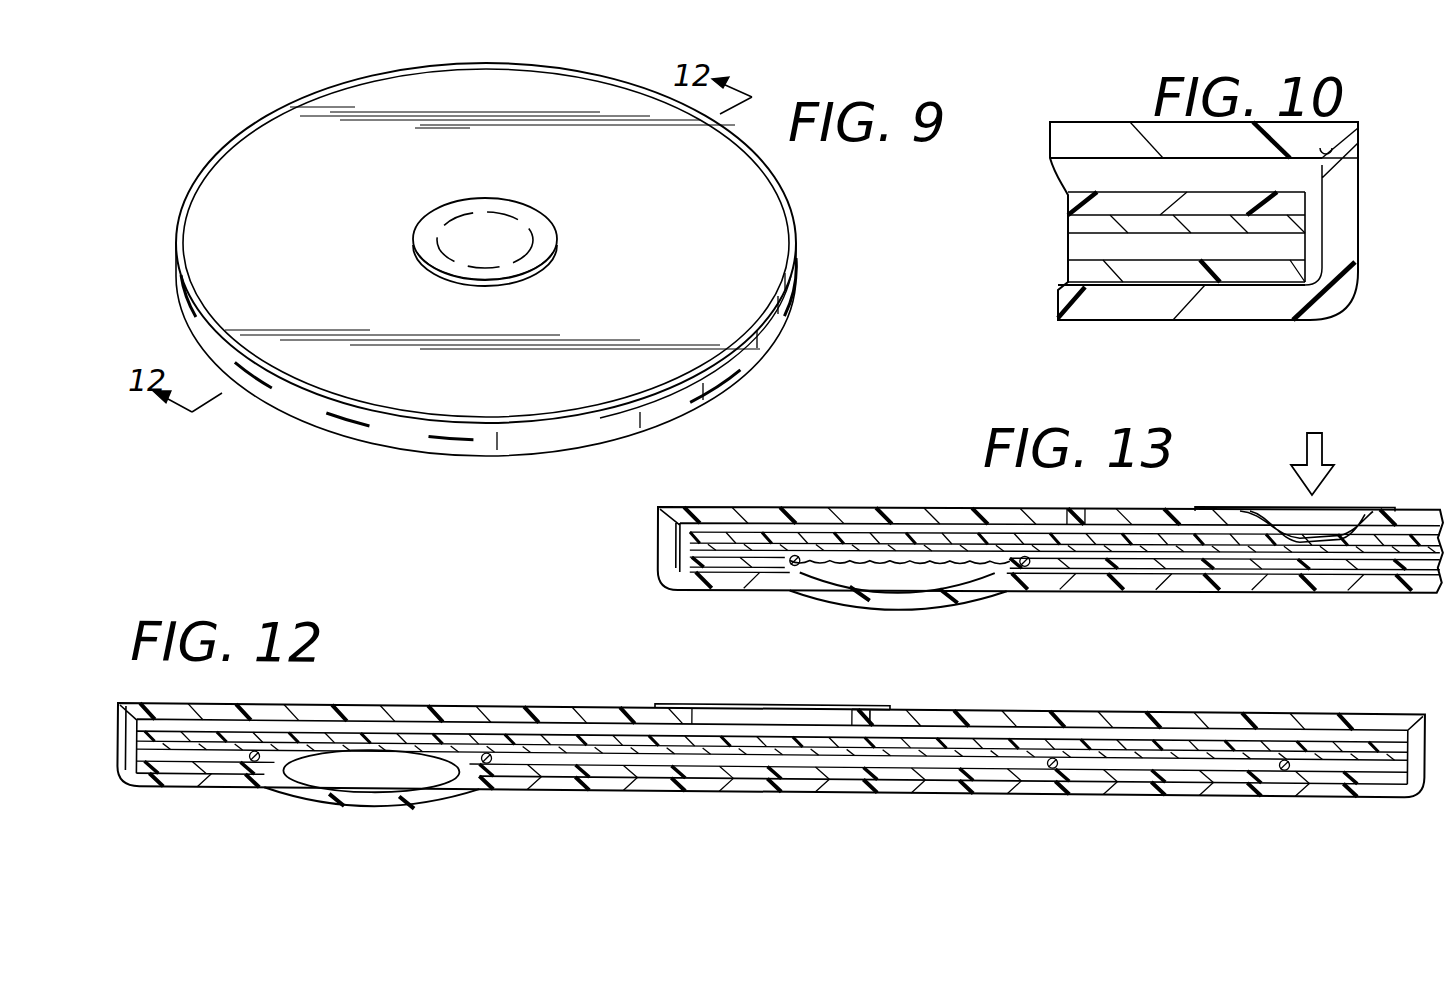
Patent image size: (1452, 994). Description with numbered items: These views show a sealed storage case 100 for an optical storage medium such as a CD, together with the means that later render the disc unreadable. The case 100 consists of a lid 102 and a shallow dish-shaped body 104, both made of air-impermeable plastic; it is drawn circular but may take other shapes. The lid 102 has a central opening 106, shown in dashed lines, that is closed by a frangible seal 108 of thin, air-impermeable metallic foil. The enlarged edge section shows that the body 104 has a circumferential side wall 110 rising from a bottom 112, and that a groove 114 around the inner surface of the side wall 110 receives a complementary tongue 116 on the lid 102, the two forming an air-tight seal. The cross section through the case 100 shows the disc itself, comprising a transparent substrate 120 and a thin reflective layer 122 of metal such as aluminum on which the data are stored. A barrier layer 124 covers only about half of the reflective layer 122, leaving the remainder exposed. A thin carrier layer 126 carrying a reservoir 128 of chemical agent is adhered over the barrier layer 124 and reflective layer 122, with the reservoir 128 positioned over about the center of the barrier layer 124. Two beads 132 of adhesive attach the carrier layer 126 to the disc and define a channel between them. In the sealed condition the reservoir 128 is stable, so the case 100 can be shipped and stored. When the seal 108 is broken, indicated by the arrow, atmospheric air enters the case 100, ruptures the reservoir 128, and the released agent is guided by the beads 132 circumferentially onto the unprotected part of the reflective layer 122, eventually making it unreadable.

In FIG. 9, the case 100 is at (867, 193).
In FIG. 13, the case 100 is at (1050, 550).
In FIG. 12, the case 100 is at (775, 798).
In FIG. 9, the lid 102 is at (767, 272).
In FIG. 10, the lid 102 is at (1072, 128).
In FIG. 13, the lid 102 is at (1040, 516).
In FIG. 12, the lid 102 is at (495, 710).
In FIG. 9, the body 104 is at (770, 327).
In FIG. 10, the body 104 is at (1068, 295).
In FIG. 13, the body 104 is at (1065, 572).
In FIG. 12, the body 104 is at (857, 786).
In FIG. 9, the opening 106 is at (517, 233).
In FIG. 12, the opening 106 is at (800, 714).
In FIG. 9, the frangible seal 108 is at (547, 243).
In FIG. 13, the frangible seal 108 is at (1248, 509).
In FIG. 12, the frangible seal 108 is at (878, 703).
In FIG. 9, the side wall 110 is at (697, 388).
In FIG. 10, the side wall 110 is at (1352, 233).
In FIG. 10, the bottom 112 is at (1283, 310).
In FIG. 10, the groove 114 is at (1335, 148).
In FIG. 10, the tongue 116 is at (1323, 147).
In FIG. 12, the transparent substrate 120 is at (307, 734).
In FIG. 12, the reflective layer 122 is at (225, 743).
In FIG. 12, the barrier layer 124 is at (297, 750).
In FIG. 12, the carrier layer 126 is at (607, 766).
In FIG. 12, the reservoir 128 is at (410, 771).
In FIG. 12, the beads of adhesive 132 is at (260, 760).